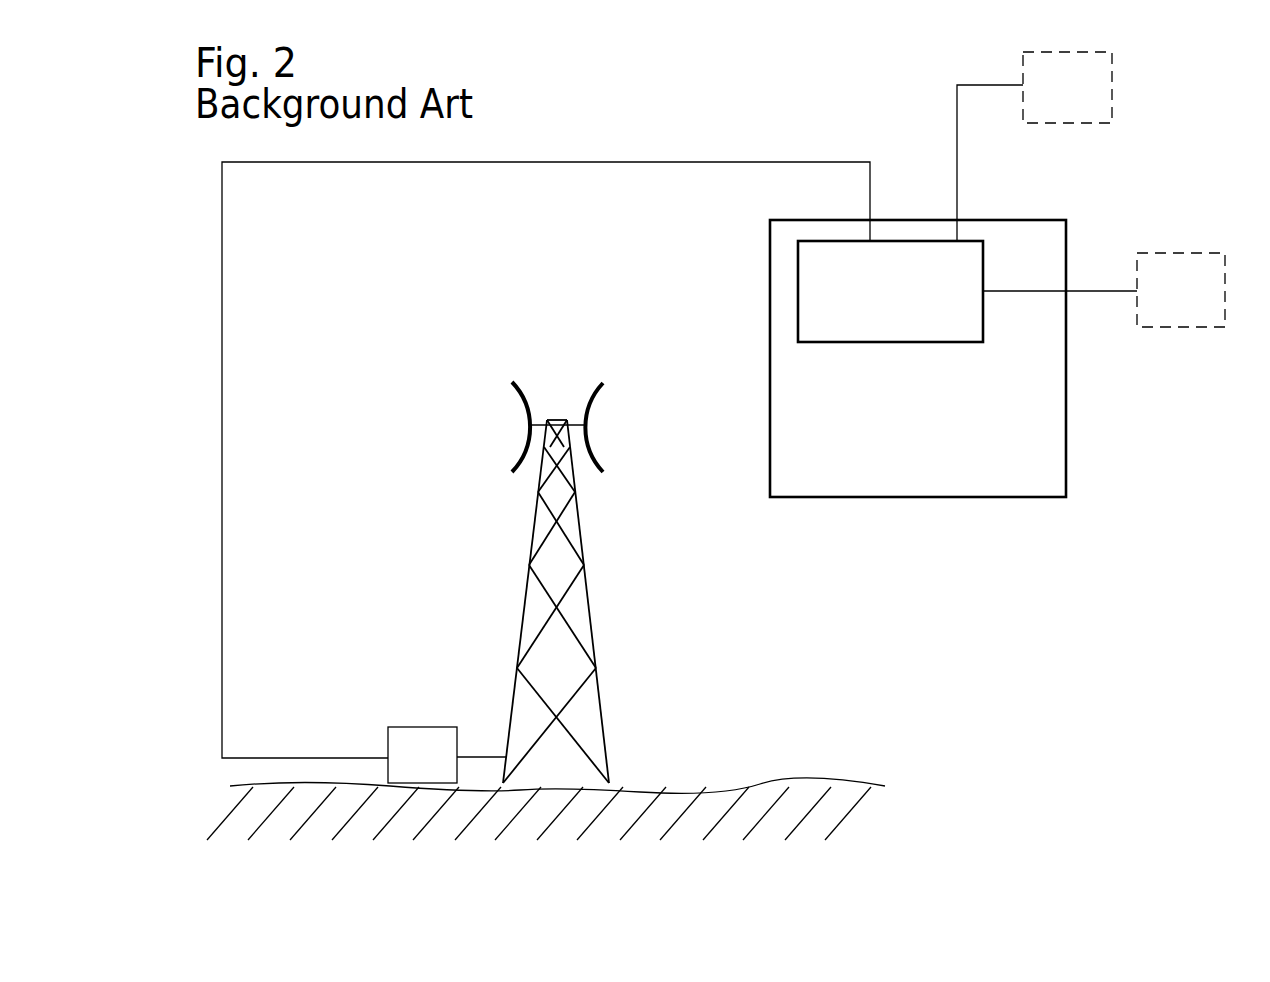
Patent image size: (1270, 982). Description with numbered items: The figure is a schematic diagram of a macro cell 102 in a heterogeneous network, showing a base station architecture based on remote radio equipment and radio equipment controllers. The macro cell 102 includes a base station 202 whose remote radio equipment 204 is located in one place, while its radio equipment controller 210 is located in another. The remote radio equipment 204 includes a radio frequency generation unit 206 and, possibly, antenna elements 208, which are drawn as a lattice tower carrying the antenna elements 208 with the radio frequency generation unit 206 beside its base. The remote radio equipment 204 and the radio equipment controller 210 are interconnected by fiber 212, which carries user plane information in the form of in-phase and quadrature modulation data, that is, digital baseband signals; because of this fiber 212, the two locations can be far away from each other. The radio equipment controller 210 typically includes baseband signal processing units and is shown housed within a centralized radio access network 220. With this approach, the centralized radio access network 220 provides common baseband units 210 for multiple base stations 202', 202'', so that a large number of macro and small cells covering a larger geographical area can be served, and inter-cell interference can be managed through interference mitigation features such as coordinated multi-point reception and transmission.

The macro cell 102 is at (665, 117).
The base station 202 is at (345, 249).
The base station 202' is at (1108, 259).
The base station 202'' is at (1090, 146).
The remote radio equipment 204 is at (470, 578).
The radio frequency generation unit 206 is at (433, 727).
The antenna elements 208 is at (519, 396).
The radio equipment controller 210 is at (903, 342).
The fiber 212 is at (222, 667).
The centralized radio access network 220 is at (988, 497).